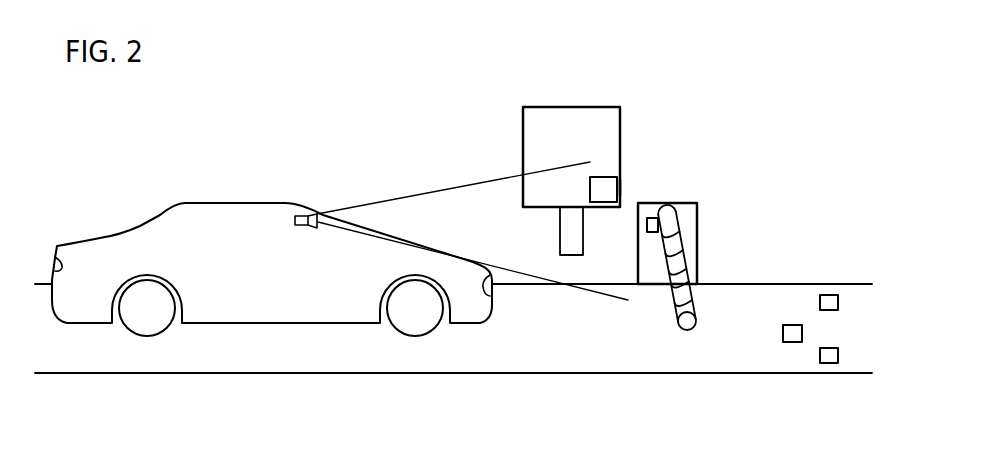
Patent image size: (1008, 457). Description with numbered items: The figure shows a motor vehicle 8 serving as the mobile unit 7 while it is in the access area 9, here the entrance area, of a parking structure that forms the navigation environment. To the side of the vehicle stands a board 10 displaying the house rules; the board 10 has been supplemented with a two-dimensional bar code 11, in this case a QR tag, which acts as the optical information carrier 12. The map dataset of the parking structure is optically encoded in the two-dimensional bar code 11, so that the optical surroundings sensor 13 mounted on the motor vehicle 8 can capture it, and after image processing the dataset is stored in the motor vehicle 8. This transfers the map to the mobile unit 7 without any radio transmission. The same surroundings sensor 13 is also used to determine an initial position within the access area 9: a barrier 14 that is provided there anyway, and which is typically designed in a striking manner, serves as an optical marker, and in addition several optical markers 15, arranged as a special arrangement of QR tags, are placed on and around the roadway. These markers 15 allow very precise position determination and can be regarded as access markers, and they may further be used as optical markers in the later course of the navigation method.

The mobile unit 7 is at (147, 203).
The motor vehicle 8 is at (242, 203).
The access area 9 is at (515, 348).
The board 10 is at (622, 128).
The two-dimensional bar code 11 is at (617, 173).
The optical information carrier 12 is at (622, 187).
The optical surroundings sensor 13 is at (303, 217).
The barrier 14 is at (678, 328).
The optical markers 15 is at (650, 233).